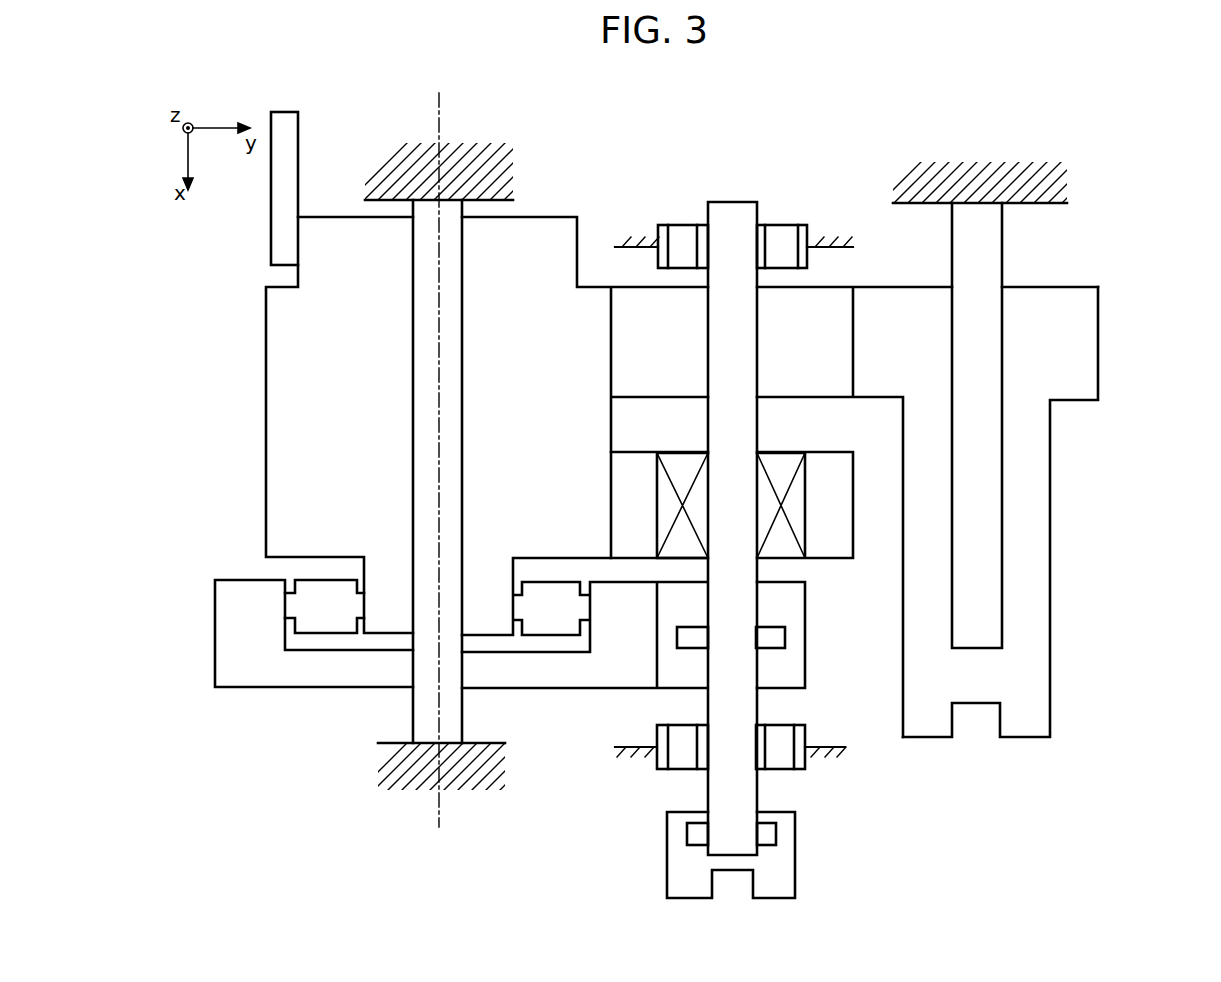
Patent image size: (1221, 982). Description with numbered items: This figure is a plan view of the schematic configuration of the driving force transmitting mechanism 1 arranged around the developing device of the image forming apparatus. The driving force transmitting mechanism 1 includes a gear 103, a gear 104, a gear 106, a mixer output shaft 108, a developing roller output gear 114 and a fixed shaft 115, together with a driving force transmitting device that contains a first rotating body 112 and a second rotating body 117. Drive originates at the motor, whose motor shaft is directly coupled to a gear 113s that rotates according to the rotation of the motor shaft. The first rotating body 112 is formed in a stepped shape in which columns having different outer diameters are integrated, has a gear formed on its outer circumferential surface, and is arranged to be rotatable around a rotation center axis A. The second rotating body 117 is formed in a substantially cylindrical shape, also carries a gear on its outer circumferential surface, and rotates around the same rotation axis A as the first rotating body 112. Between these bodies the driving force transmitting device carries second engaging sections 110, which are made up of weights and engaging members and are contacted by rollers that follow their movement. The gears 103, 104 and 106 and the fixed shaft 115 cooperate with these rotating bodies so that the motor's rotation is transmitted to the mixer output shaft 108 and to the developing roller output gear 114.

The driving force transmitting mechanism 1 is at (316, 752).
The rotation center axis A is at (440, 820).
The gear 103 is at (632, 297).
The gear 104 is at (854, 556).
The gear 106 is at (799, 651).
The mixer output shaft 108 is at (788, 866).
The second engaging sections 110 is at (323, 603).
The first rotating body 112 is at (283, 463).
The gear 113s is at (282, 248).
The developing roller output gear 114 is at (1093, 348).
The fixed shaft 115 is at (990, 607).
The second rotating body 117 is at (249, 677).